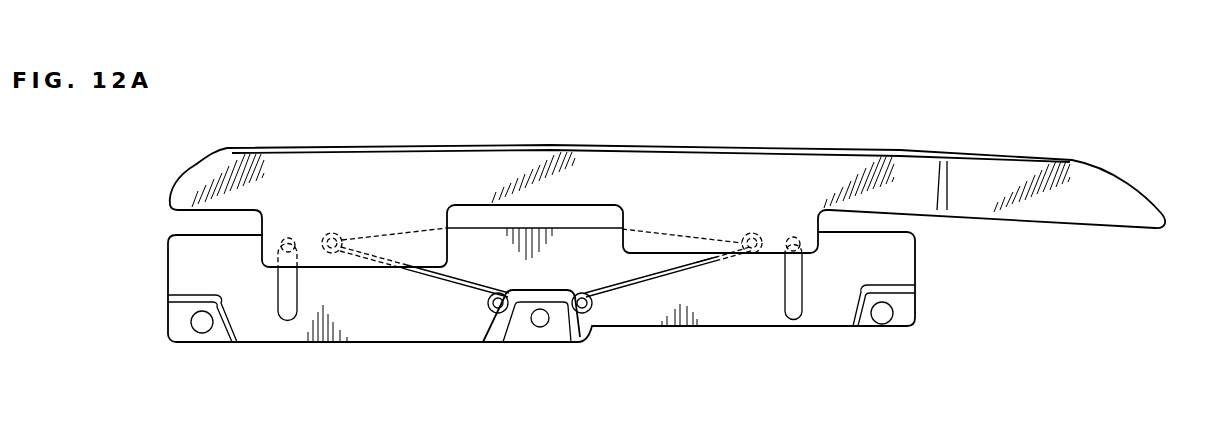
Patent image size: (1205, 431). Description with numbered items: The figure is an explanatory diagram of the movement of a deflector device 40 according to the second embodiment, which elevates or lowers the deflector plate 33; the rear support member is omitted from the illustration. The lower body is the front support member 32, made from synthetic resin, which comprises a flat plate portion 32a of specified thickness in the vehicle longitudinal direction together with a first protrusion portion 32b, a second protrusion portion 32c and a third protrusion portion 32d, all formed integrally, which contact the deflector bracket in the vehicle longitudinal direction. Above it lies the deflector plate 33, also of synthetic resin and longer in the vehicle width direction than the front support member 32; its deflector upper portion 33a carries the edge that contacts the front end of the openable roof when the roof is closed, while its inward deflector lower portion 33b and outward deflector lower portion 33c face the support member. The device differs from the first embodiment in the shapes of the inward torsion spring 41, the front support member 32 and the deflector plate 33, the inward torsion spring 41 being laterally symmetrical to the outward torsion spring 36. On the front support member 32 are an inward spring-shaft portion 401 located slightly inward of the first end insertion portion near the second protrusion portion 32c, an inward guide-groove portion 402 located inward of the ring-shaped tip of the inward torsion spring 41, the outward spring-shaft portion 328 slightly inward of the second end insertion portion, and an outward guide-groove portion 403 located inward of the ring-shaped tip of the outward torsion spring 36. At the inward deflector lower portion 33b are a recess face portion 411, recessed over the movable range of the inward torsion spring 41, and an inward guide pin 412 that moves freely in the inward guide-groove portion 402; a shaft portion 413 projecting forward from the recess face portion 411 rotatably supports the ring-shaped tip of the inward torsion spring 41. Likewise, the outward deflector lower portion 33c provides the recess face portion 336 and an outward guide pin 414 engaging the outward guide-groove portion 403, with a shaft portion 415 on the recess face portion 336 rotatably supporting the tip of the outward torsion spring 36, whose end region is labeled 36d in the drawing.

The deflector device 40 is at (213, 99).
The front support member 32 is at (916, 262).
The flat plate portion 32a is at (178, 268).
The first protrusion portion 32b is at (189, 333).
The second protrusion portion 32c is at (553, 332).
The third protrusion portion 32d is at (903, 323).
The deflector plate 33 is at (983, 153).
The deflector upper portion 33a is at (193, 180).
The inward deflector lower portion 33b is at (272, 263).
The outward deflector lower portion 33c is at (820, 256).
The recess face portion 336 is at (637, 250).
The inward torsion spring 41 is at (420, 282).
The recess face portion 411 is at (416, 249).
The inward guide pin 412 is at (282, 240).
The shaft portion 413 is at (340, 239).
The outward guide pin 414 is at (794, 235).
The shaft portion 415 is at (750, 233).
The inward spring-shaft portion 401 is at (491, 312).
The outward spring-shaft portion 328 is at (590, 310).
The outward torsion spring 36 is at (637, 284).
The end portion of second link 36d is at (704, 267).
The inward guide-groove portion 402 is at (282, 322).
The outward guide-groove portion 403 is at (795, 322).